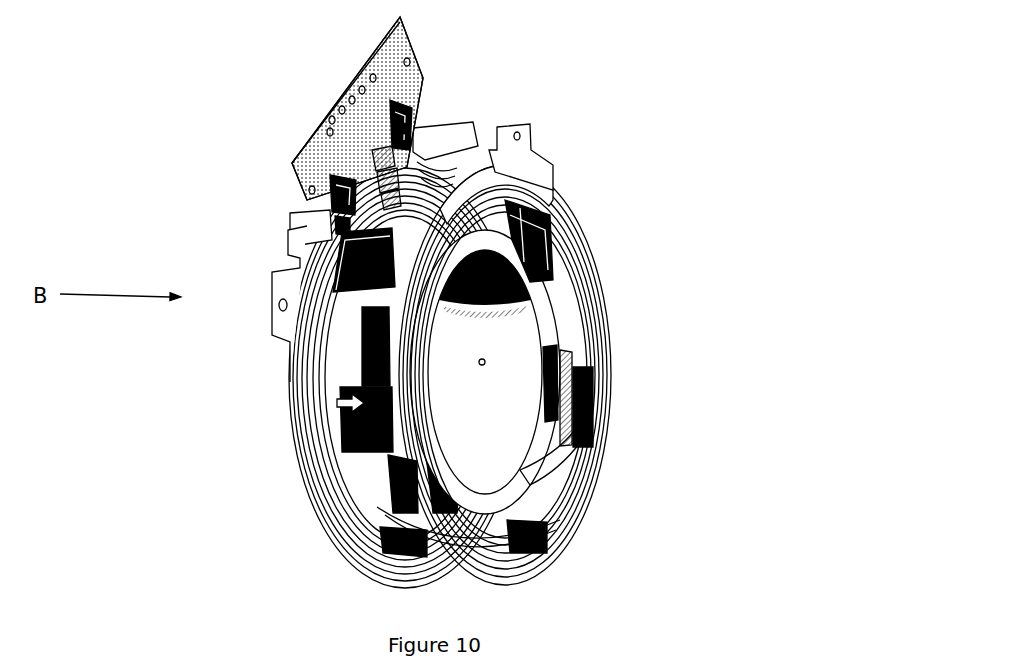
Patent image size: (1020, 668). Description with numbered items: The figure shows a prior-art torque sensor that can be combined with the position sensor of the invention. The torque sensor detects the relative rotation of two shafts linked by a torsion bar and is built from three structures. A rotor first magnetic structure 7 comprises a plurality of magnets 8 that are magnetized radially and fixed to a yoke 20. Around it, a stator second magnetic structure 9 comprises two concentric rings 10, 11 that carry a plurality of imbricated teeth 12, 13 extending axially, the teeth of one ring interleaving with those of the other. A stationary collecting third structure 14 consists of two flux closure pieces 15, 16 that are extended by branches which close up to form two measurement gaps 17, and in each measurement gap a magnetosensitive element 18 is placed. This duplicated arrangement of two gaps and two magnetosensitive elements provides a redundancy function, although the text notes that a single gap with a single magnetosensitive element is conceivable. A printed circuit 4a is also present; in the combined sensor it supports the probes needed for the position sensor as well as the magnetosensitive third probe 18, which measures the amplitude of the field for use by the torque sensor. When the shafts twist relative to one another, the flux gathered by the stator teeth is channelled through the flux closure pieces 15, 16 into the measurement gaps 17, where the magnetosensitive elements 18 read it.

The printed circuit 4a is at (319, 146).
The rotor first magnetic structure 7 is at (562, 481).
The magnets 8 is at (556, 301).
The stator second magnetic structure 9 is at (626, 407).
The concentric ring 10 is at (322, 452).
The concentric ring 11 is at (571, 553).
The imbricated teeth 12 is at (337, 402).
The imbricated teeth 13 is at (539, 247).
The stationary collecting third structure 14 is at (563, 157).
The flux closure piece 15 is at (297, 256).
The flux closure piece 16 is at (498, 147).
The measurement gaps 17 is at (393, 127).
The magnetosensitive elements 18 is at (397, 127).
The yoke 20 is at (541, 402).